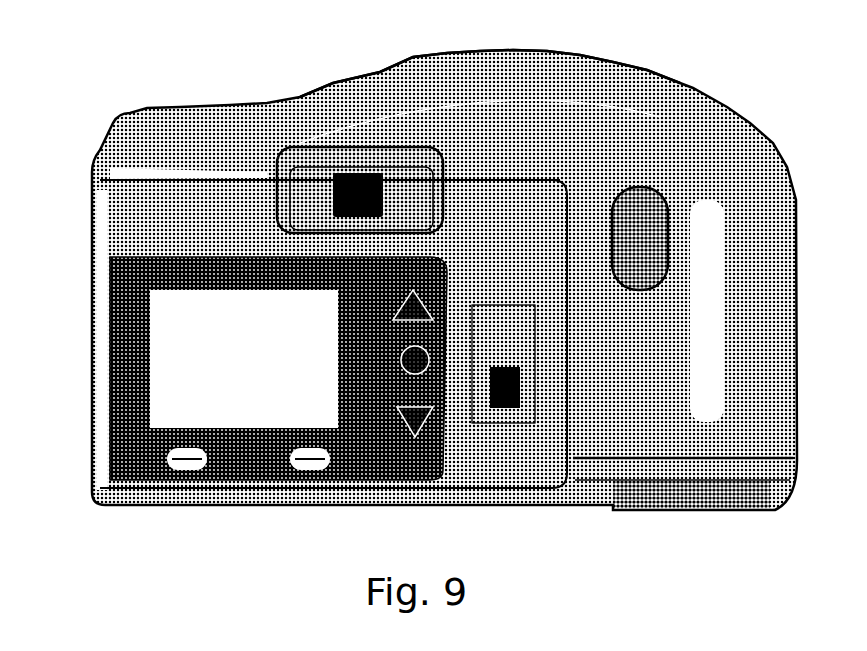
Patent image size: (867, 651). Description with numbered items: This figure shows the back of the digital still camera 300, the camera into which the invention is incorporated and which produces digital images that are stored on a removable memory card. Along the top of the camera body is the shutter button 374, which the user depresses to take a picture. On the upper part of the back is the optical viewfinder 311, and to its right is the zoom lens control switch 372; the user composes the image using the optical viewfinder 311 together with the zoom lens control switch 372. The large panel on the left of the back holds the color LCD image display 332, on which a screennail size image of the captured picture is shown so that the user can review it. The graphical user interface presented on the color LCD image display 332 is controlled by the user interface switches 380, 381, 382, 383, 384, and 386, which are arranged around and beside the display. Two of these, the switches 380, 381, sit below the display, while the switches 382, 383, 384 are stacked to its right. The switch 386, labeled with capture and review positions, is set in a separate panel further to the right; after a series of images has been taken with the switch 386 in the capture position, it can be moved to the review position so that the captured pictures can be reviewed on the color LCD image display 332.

The digital still camera 300 is at (768, 129).
The optical viewfinder 311 is at (346, 176).
The color LCD image display 332 is at (193, 392).
The zoom lens control switch 372 is at (660, 190).
The shutter button 374 is at (642, 67).
The user interface switch 380 is at (182, 487).
The user interface switch 381 is at (292, 487).
The user interface switch 382 is at (400, 312).
The user interface switch 383 is at (420, 366).
The user interface switch 384 is at (417, 413).
The capture/review switch 386 is at (513, 347).